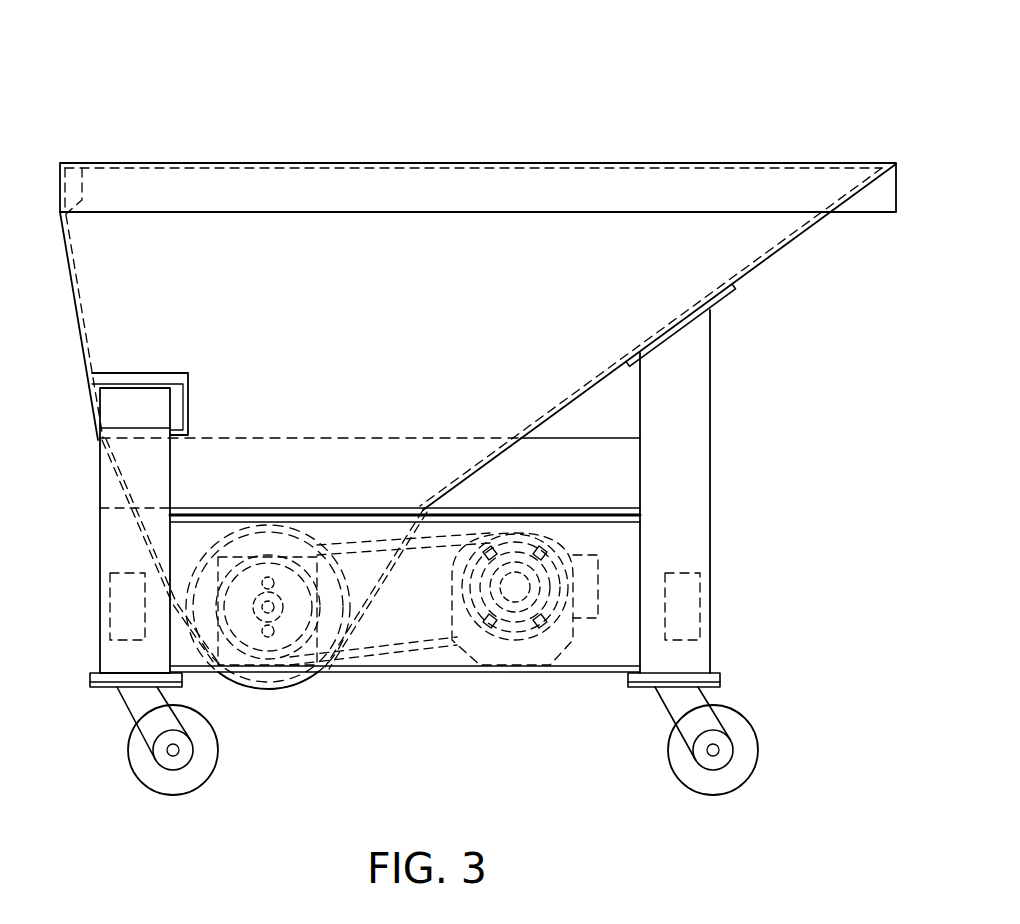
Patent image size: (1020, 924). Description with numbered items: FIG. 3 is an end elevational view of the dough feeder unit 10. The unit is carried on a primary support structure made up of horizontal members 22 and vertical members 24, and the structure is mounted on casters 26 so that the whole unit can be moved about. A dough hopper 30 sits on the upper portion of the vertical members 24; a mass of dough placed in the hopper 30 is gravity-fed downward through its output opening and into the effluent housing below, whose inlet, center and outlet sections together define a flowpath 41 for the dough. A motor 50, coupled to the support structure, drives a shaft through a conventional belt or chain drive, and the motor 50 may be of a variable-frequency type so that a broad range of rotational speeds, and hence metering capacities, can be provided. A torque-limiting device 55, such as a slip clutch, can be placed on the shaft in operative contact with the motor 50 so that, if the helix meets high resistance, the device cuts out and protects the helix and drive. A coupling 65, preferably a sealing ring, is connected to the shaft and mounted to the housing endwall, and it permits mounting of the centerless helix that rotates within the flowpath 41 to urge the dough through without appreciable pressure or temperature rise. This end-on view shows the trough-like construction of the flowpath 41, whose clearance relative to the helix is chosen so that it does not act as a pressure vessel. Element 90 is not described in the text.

The dough feeder unit 10 is at (737, 94).
The horizontal members 22 is at (353, 470).
The vertical members 24 is at (710, 472).
The casters 26 is at (128, 748).
The dough hopper 30 is at (757, 258).
The flowpath 41 is at (193, 538).
The motor 50 is at (510, 670).
The torque-limiting device 55 is at (317, 667).
The coupling 65 is at (272, 540).
The drive belt 90 is at (375, 568).